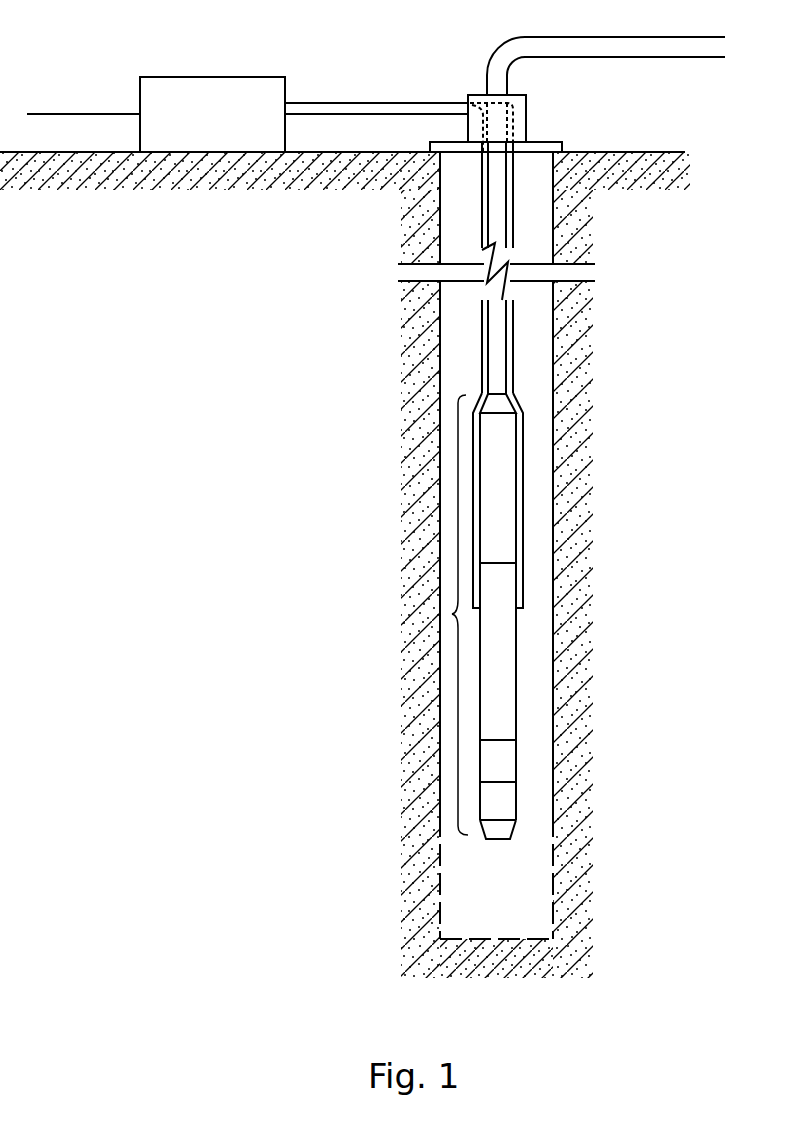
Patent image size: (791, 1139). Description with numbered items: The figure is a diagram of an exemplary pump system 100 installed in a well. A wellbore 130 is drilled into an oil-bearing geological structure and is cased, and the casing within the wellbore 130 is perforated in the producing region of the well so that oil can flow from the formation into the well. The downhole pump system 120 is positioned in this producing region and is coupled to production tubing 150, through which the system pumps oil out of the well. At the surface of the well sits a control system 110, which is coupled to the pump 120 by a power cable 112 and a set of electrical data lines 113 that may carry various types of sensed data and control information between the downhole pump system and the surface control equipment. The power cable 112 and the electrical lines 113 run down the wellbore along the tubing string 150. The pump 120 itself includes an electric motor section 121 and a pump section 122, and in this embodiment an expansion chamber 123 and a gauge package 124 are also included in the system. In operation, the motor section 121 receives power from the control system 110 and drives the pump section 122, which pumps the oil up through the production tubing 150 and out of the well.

The pump system 100 is at (268, 317).
The control system 110 is at (216, 77).
The power cable 112 is at (372, 103).
The electrical data lines 113 is at (423, 103).
The pump system 120 is at (452, 614).
The electric motor section 121 is at (516, 651).
The pump section 122 is at (523, 433).
The expansion chamber 123 is at (516, 763).
The gauge package 124 is at (516, 808).
The wellbore 130 is at (551, 512).
The production tubing 150 is at (507, 347).